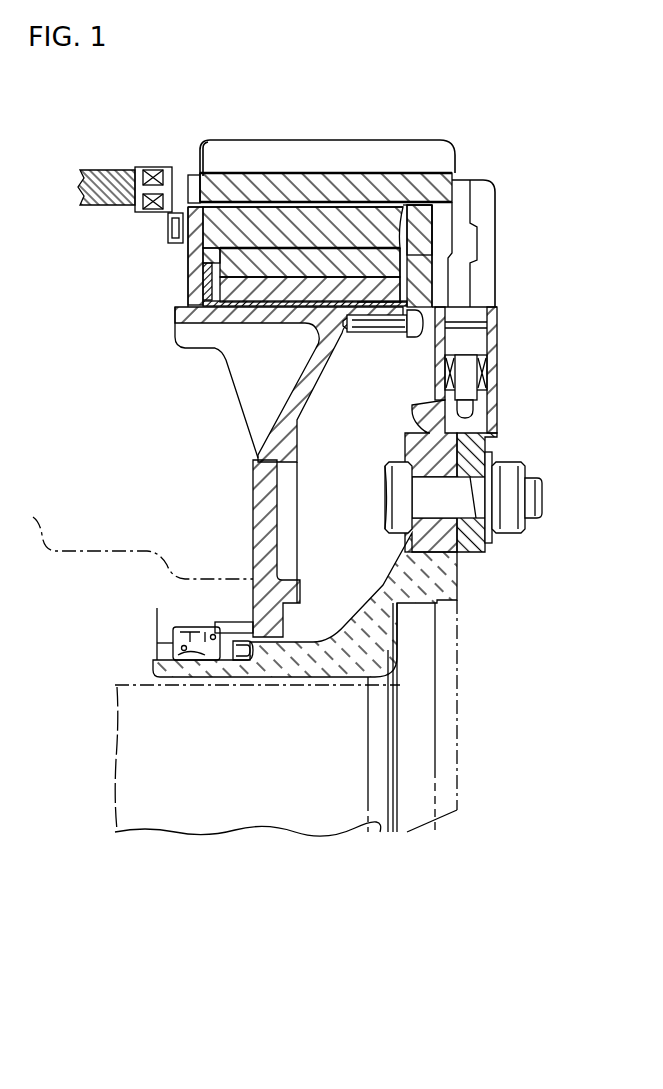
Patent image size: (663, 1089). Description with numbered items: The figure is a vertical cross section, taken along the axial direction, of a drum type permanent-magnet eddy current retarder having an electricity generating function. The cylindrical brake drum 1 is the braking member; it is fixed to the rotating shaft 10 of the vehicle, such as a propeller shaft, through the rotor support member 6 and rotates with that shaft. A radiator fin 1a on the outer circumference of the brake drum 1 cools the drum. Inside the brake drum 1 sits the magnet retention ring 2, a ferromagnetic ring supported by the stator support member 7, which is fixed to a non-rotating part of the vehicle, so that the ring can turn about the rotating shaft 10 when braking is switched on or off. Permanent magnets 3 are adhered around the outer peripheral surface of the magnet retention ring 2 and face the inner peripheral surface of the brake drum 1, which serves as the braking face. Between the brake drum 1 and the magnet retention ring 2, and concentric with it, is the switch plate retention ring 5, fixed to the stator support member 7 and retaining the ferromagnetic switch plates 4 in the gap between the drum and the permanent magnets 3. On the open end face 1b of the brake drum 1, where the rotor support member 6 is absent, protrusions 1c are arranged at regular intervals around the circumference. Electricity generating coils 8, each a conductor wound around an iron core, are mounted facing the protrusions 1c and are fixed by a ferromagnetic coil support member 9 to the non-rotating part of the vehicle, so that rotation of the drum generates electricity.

The brake drum 1 is at (430, 188).
The radiator fin 1a is at (395, 138).
The end face 1b is at (203, 165).
The protrusions 1c is at (190, 178).
The magnet retention ring 2 is at (228, 308).
The permanent magnets 3 is at (235, 263).
The switch plates 4 is at (385, 226).
The switch plate retention ring 5 is at (418, 244).
The rotor support member 6 is at (458, 278).
The stator support member 7 is at (258, 463).
The electricity generating coils 8 is at (140, 170).
The coil support member 9 is at (95, 170).
The rotating shaft 10 is at (174, 803).